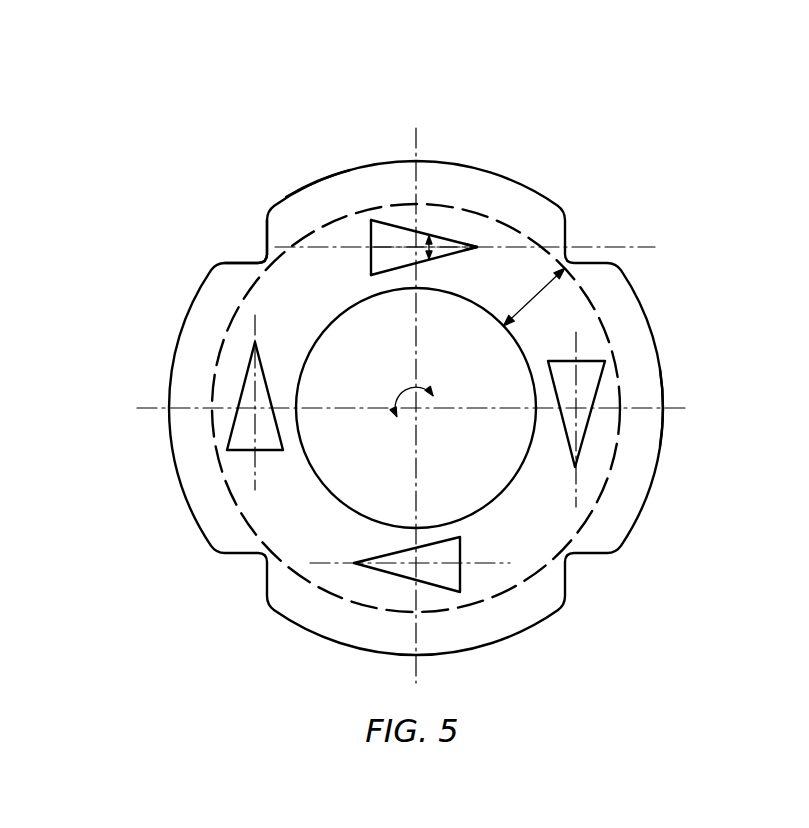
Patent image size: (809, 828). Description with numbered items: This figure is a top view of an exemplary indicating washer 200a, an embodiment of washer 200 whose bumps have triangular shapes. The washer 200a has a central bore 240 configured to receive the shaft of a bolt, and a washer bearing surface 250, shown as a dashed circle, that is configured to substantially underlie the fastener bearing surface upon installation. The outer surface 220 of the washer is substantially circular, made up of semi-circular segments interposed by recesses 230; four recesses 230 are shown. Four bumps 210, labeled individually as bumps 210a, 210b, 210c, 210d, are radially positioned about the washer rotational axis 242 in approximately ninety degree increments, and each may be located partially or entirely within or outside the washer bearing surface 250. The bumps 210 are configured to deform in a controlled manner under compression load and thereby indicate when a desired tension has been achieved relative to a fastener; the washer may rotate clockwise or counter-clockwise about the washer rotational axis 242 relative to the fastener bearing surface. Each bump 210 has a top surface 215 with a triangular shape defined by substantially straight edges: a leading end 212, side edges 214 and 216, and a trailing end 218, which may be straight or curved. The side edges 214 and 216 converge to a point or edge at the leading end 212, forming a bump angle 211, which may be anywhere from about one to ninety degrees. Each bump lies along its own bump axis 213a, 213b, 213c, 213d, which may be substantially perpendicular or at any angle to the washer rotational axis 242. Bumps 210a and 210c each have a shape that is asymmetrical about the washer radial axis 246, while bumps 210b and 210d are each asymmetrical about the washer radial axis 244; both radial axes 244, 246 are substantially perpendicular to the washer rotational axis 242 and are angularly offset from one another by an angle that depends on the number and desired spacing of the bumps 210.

The washer 200 is at (373, 369).
The washer 200a is at (180, 251).
The bumps 210 is at (419, 363).
The bump 210a is at (409, 204).
The bump 210b is at (588, 432).
The bump 210c is at (360, 570).
The bump 210d is at (243, 375).
The bump angle 211 is at (414, 250).
The leading end 212 is at (477, 247).
The bump axis 213a is at (628, 247).
The bump axis 213b is at (577, 495).
The bump axis 213c is at (507, 565).
The bump axis 213d is at (255, 327).
The side edge 214 is at (457, 254).
The top surface 215 is at (384, 255).
The side edge 216 is at (457, 240).
The trailing end 218 is at (368, 237).
The outer surface 220 is at (317, 182).
The recesses 230 is at (266, 221).
The bore 240 is at (312, 465).
The washer rotational axis 242 is at (402, 390).
The washer radial axis 244 is at (672, 408).
The washer radial axis 246 is at (413, 672).
The washer bearing surface 250 is at (537, 297).